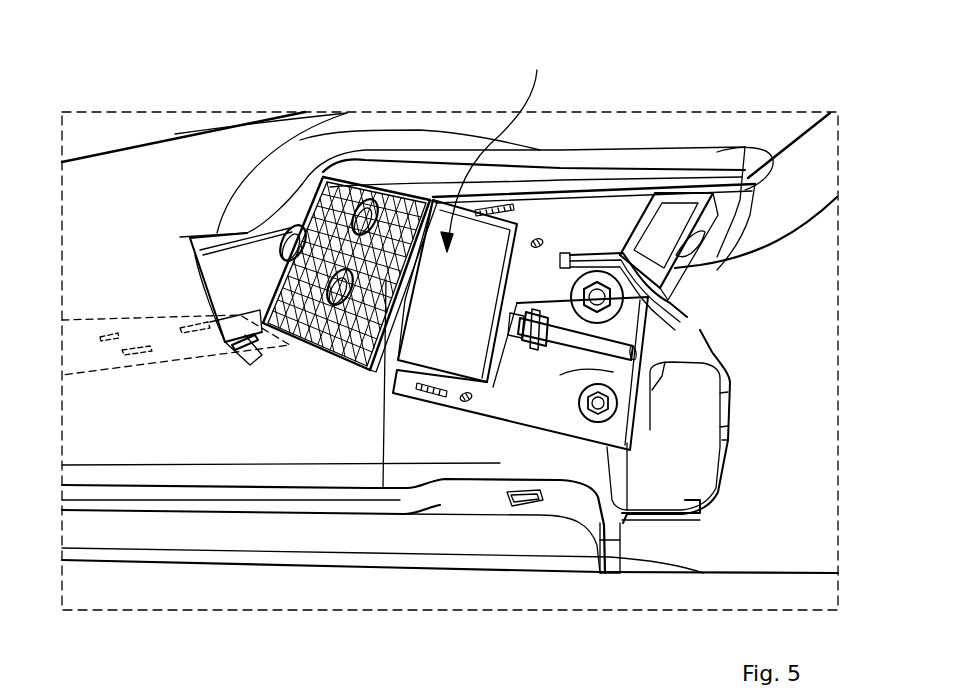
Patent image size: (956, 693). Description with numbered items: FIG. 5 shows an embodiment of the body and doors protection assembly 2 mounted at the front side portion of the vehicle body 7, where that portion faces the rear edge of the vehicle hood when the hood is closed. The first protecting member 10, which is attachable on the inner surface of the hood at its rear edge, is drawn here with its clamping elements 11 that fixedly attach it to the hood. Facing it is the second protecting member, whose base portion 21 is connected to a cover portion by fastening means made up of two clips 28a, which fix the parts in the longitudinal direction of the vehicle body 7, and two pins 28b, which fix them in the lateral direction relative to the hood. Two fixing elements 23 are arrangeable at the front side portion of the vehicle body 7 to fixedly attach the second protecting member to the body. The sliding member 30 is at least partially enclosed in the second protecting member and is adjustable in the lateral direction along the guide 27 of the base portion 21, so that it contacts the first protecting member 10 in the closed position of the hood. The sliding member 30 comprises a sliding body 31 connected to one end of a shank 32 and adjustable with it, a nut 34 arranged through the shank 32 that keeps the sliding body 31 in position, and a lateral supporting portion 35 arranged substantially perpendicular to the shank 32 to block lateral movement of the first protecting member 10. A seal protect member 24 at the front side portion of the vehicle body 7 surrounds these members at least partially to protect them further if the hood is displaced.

The body and doors protection assembly 2 is at (222, 84).
The vehicle body 7 is at (690, 405).
The first protecting member 10 is at (323, 340).
The clamping elements 11 is at (277, 230).
The base portion 21 is at (597, 290).
The fixing elements 23 is at (618, 250).
The seal protect member 24 is at (187, 253).
The guide 27 is at (528, 215).
The clips 28a is at (487, 213).
The pins 28b is at (537, 240).
The sliding member 30 is at (498, 149).
The sliding body 31 is at (527, 340).
The shank 32 is at (680, 310).
The nut 34 is at (598, 410).
The lateral supporting portion 35 is at (434, 400).